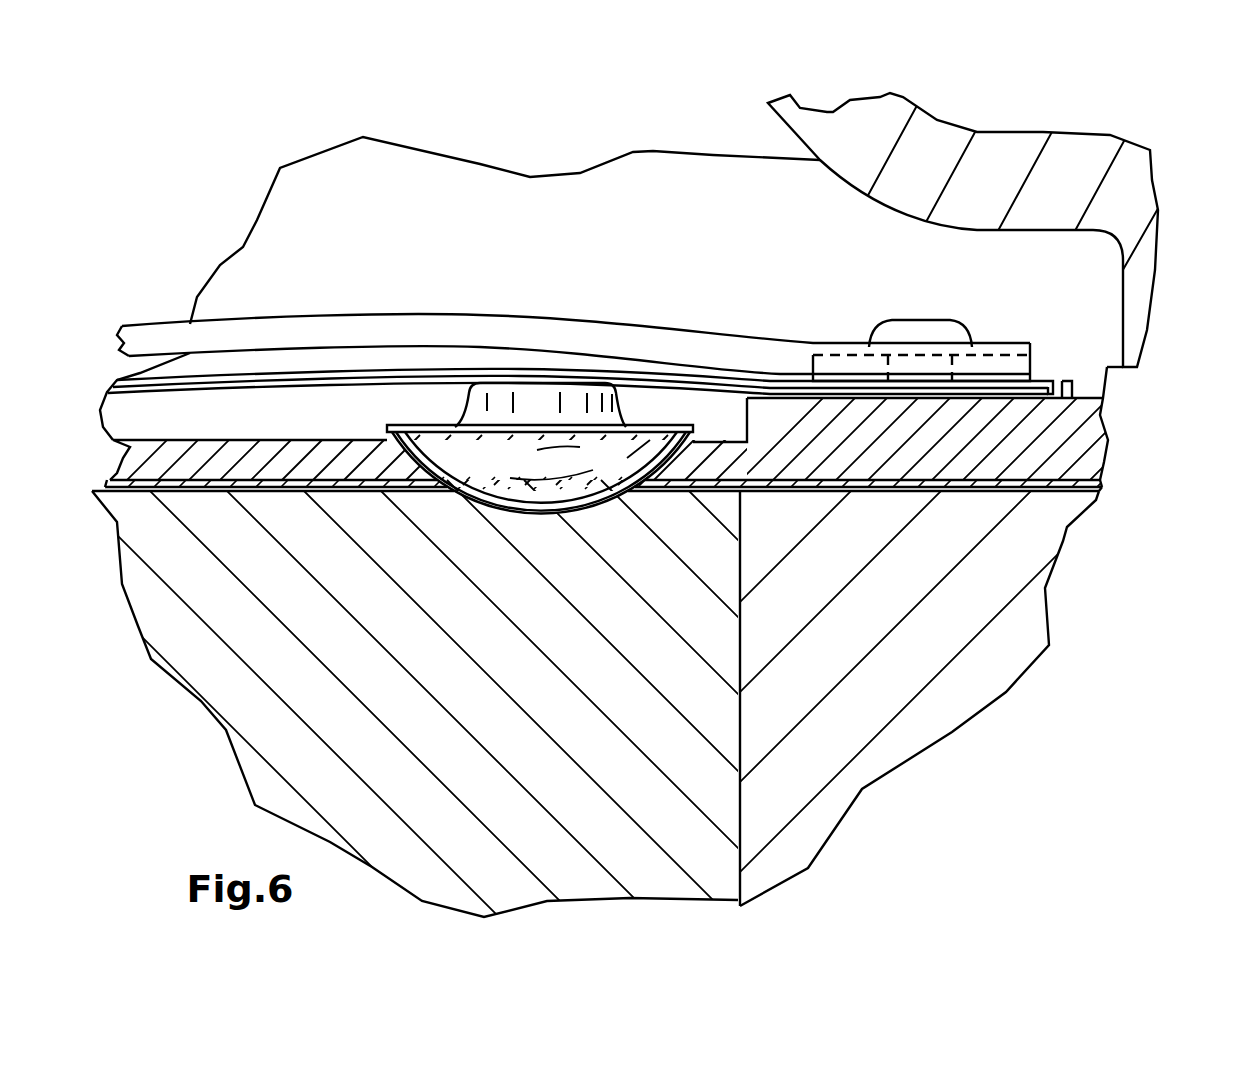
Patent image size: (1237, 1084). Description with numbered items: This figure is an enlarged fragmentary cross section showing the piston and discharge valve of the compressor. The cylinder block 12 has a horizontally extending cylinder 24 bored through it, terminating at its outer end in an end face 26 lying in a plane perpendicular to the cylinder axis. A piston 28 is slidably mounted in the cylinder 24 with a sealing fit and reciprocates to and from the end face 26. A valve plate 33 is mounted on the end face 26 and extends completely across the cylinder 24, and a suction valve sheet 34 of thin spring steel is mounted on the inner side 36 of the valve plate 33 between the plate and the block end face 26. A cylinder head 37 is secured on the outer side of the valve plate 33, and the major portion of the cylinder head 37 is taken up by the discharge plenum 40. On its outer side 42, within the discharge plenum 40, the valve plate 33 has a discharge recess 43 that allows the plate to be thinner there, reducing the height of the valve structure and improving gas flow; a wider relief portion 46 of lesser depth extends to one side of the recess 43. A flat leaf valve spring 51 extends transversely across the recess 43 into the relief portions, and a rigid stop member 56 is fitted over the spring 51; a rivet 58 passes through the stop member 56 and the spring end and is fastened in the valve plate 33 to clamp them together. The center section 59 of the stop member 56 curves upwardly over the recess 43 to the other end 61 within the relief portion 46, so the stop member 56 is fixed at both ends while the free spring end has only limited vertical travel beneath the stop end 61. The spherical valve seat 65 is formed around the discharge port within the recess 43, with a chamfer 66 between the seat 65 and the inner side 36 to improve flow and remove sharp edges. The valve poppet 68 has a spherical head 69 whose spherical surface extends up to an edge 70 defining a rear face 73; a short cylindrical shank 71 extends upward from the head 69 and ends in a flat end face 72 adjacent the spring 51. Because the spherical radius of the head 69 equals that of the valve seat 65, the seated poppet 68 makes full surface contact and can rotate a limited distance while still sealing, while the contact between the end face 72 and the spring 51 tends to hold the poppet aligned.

The cylinder block 12 is at (966, 638).
The cylinder 24 is at (739, 805).
The end face 26 is at (1082, 480).
The piston 28 is at (463, 682).
The valve plate 33 is at (1080, 434).
The suction valve sheet 34 is at (1010, 480).
The inner side 36 is at (400, 450).
The cylinder head 37 is at (1020, 137).
The discharge plenum 40 is at (414, 230).
The outer side 42 is at (1087, 383).
The discharge recess 43 is at (197, 440).
The relief portion 46 is at (1062, 383).
The flat leaf valve spring 51 is at (220, 381).
The rigid stop member 56 is at (167, 322).
The rivet 58 is at (924, 330).
The center section 59 is at (413, 333).
The end of stop member 61 is at (1000, 347).
The valve seat 65 is at (397, 425).
The chamfer 66 is at (432, 473).
The valve poppet 68 is at (508, 460).
The spherical head 69 is at (627, 463).
The edge 70 is at (713, 423).
The cylindrical shank 71 is at (507, 402).
The end face 72 is at (530, 383).
The rear face 73 is at (640, 424).